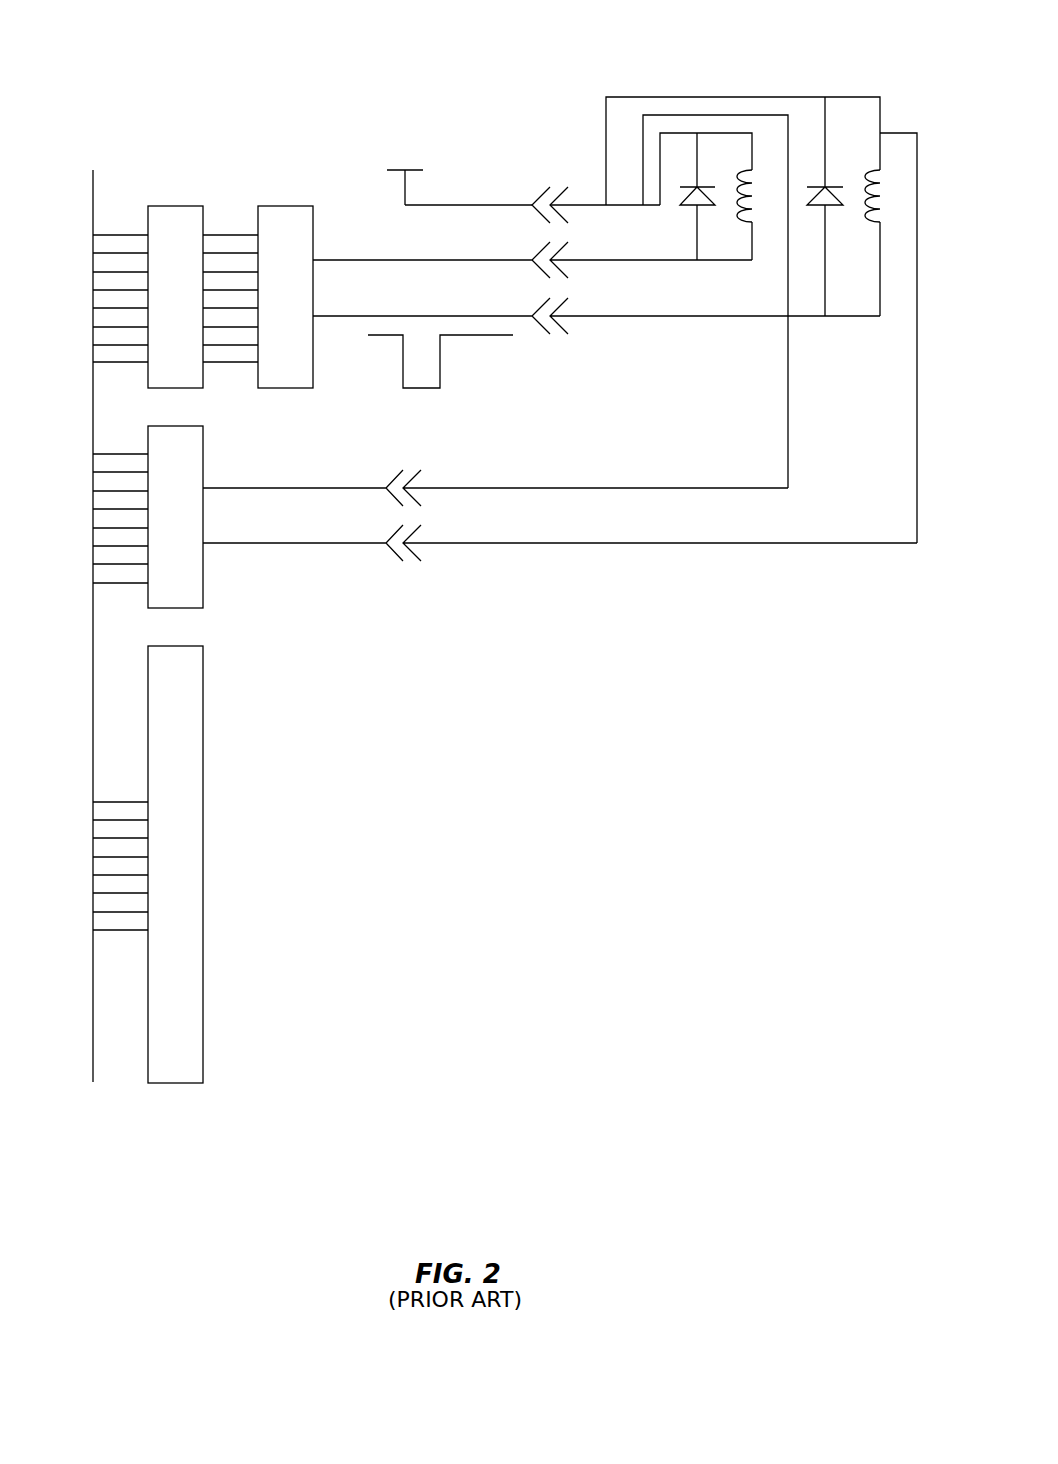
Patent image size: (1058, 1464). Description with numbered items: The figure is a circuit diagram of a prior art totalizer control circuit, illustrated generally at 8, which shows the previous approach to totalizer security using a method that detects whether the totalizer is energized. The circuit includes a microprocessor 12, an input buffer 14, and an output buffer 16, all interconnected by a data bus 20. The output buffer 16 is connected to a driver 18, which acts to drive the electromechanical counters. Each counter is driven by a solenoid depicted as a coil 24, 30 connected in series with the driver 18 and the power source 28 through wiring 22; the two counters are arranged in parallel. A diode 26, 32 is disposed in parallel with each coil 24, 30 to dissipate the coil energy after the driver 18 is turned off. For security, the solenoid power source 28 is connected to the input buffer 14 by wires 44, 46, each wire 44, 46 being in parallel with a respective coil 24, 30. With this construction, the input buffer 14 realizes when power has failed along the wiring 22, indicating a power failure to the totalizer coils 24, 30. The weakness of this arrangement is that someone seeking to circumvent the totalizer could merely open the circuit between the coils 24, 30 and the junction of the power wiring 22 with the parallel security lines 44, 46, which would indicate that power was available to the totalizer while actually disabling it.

The prior art circuit 8 is at (134, 70).
The microprocessor 12 is at (205, 722).
The input buffer 14 is at (205, 462).
The output buffer 16 is at (165, 206).
The driver 18 is at (275, 206).
The data bus 20 is at (93, 388).
The wiring 22 is at (488, 205).
The coil 24 is at (736, 176).
The diode 26 is at (683, 200).
The power source 28 is at (405, 130).
The coil 30 is at (864, 176).
The diode 32 is at (811, 200).
The wire 44 is at (518, 488).
The wire 46 is at (548, 543).